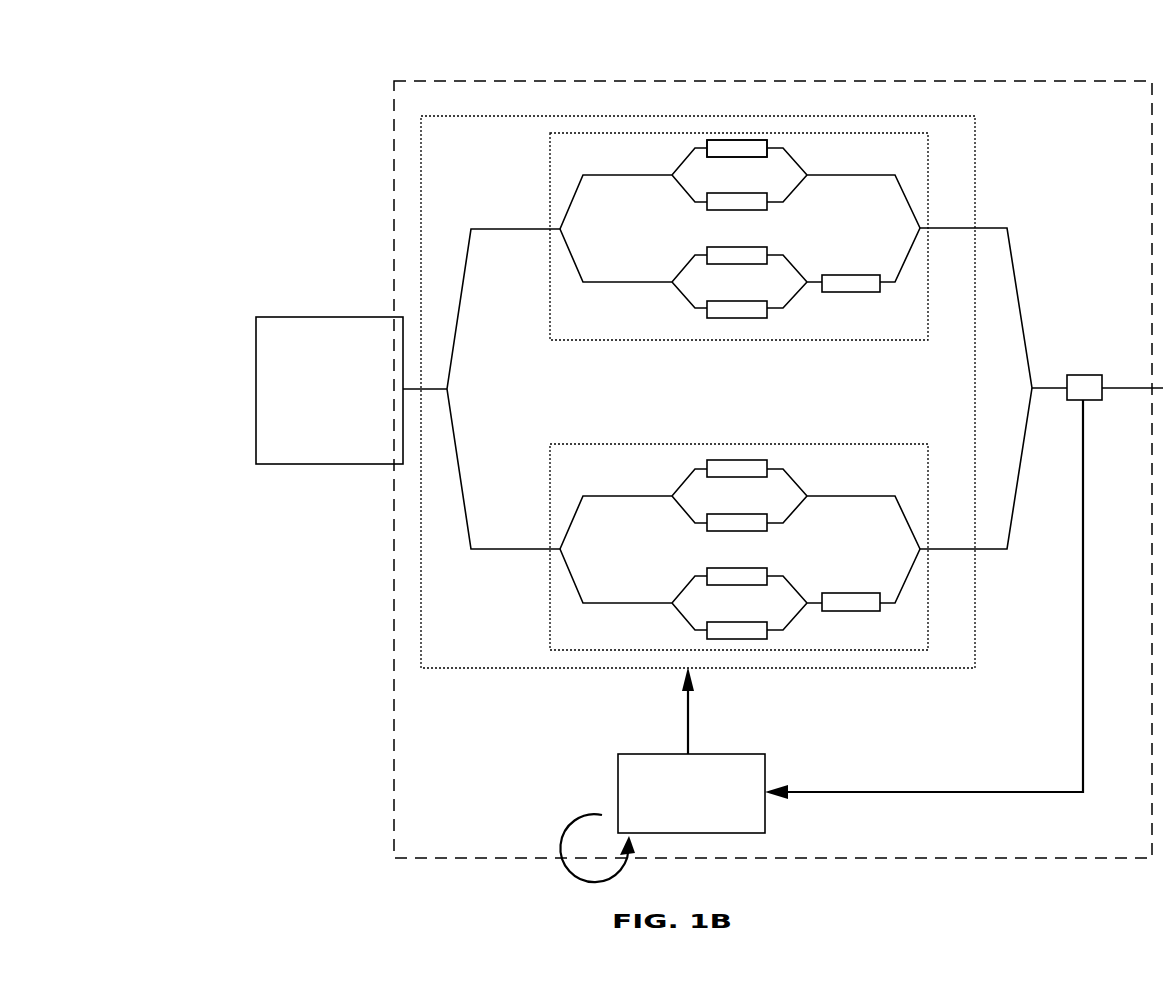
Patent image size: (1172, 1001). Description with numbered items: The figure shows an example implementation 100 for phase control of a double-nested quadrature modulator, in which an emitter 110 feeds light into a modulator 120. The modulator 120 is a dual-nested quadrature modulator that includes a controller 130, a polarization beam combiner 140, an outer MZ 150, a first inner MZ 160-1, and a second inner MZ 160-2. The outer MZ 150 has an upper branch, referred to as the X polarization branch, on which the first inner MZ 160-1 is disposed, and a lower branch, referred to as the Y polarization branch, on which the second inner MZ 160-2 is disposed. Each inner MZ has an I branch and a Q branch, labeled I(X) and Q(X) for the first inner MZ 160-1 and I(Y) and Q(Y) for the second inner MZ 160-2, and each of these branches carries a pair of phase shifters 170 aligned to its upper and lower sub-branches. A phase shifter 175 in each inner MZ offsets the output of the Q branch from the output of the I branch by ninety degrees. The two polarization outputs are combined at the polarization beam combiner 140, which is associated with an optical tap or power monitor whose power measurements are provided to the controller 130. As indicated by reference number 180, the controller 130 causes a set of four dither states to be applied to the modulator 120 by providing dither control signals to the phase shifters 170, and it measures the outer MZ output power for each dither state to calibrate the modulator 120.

The example implementation 100 is at (178, 32).
The emitter 110 is at (348, 417).
The modulator 120 is at (778, 462).
The controller 130 is at (710, 817).
The polarization beam combiner 140 is at (1115, 359).
The outer MZ 150 is at (735, 355).
The first inner MZ 160-1 is at (739, 250).
The second inner MZ 160-2 is at (739, 532).
The phase shifter 170 is at (767, 142).
The phase shifter 175 is at (862, 456).
The application of a set of dither states 180 is at (540, 819).